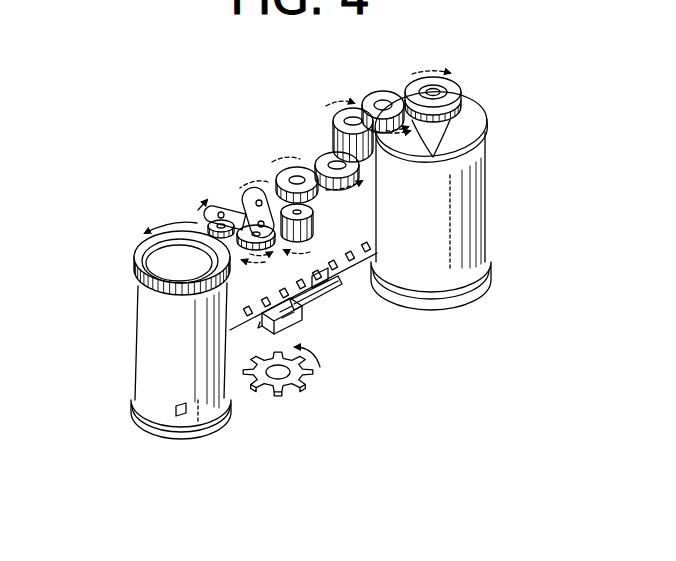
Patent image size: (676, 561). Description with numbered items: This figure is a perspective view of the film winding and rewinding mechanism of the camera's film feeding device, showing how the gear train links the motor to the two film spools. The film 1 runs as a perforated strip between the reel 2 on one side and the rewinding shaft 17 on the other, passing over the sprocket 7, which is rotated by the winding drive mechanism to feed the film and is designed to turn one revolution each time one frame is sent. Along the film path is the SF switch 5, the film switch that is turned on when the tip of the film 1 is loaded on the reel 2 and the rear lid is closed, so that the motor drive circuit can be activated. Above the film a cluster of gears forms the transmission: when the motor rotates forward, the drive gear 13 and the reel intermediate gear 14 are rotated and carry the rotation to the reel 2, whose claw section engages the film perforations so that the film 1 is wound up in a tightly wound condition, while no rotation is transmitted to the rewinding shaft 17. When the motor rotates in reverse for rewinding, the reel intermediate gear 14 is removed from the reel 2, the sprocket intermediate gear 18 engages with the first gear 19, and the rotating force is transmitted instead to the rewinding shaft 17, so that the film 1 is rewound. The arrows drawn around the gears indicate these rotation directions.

The film 1 is at (355, 268).
The reel 2 is at (158, 348).
The SF switch (film switch) 5 is at (292, 318).
The sprocket 7 is at (292, 384).
The drive gear 13 is at (237, 205).
The reel intermediate gear 14 is at (205, 224).
The rewinding shaft 17 is at (452, 127).
The sprocket intermediate gear 18 is at (233, 189).
The first gear 19 is at (302, 159).